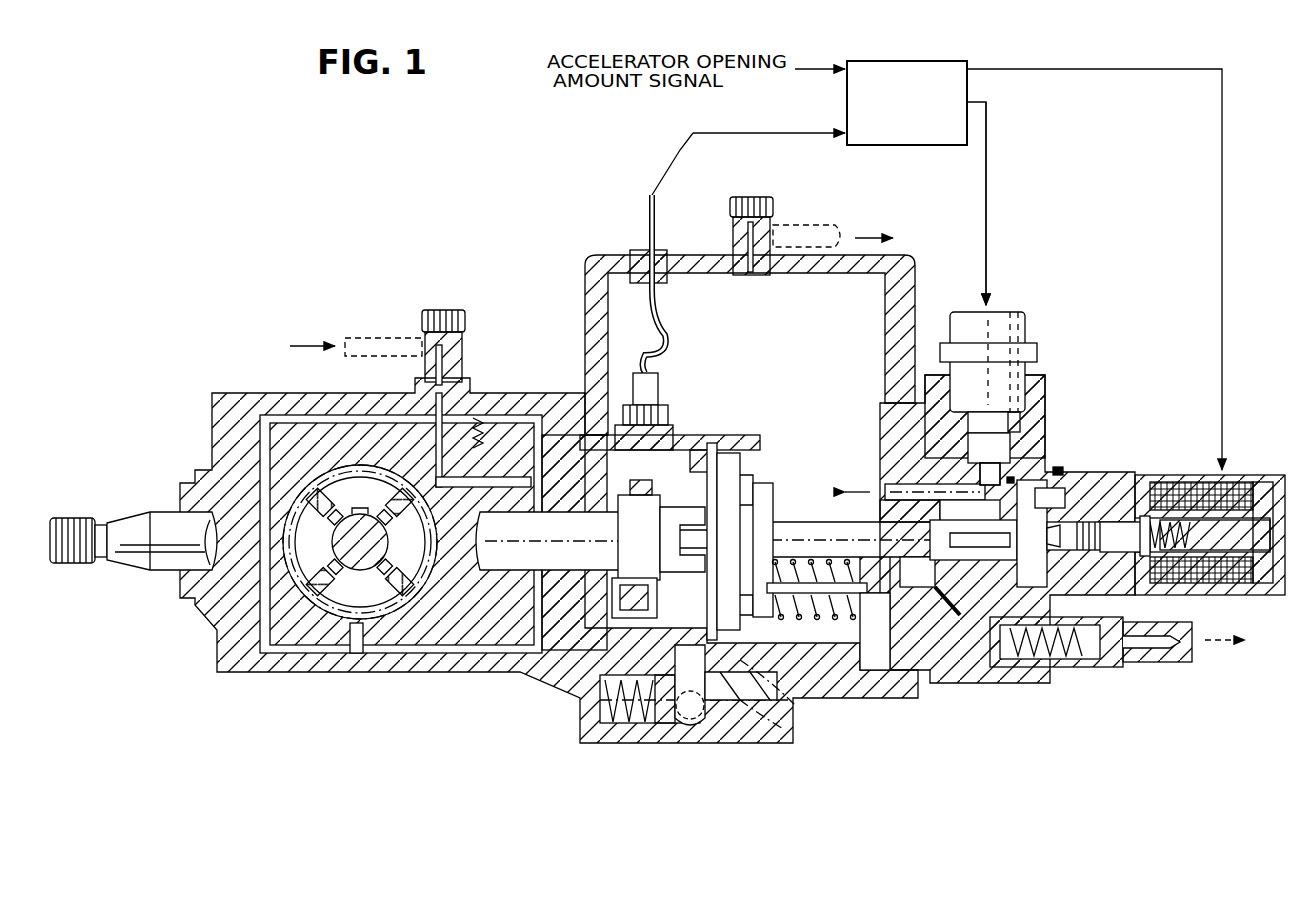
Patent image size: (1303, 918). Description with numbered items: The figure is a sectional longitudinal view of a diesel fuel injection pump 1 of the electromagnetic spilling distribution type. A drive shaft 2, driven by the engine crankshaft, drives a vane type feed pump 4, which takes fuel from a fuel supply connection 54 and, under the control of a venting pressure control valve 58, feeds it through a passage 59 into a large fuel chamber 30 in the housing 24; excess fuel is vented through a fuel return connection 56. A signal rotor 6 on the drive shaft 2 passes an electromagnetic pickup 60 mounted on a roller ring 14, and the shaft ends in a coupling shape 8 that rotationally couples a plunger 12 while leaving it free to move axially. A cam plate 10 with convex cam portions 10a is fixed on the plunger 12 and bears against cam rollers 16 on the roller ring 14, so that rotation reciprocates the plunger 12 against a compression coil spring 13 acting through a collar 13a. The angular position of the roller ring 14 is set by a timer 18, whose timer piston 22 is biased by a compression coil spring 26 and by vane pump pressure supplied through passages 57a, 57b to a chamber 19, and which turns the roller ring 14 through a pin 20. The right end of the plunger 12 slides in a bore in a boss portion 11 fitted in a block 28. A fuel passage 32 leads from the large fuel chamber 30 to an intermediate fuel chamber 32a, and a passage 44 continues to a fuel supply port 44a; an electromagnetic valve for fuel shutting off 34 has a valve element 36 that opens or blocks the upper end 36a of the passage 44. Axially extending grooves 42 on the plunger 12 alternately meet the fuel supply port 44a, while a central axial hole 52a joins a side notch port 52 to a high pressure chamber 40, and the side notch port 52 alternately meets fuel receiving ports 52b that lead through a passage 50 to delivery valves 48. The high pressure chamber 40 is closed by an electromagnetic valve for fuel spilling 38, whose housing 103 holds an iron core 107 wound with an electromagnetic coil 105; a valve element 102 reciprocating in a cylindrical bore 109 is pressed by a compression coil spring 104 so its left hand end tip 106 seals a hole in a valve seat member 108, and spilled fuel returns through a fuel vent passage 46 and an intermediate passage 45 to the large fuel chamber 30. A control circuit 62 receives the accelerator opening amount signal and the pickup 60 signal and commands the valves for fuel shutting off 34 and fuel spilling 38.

The diesel fuel injection pump 1 is at (584, 258).
The drive shaft 2 is at (125, 562).
The vane type feed pump 4 is at (395, 605).
The signal rotor 6 is at (642, 596).
The coupling shape 8 is at (700, 518).
The cam plate 10 is at (742, 475).
The convex cam portion 10a is at (733, 455).
The boss portion 11 is at (870, 482).
The plunger 12 is at (803, 522).
The compression coil spring 13 is at (800, 606).
The collar 13a is at (765, 612).
The roller ring 14 is at (672, 440).
The cam roller 16 is at (695, 452).
The timer 18 is at (666, 745).
The chamber 19 is at (780, 730).
The pin 20 is at (698, 730).
The timer piston 22 is at (655, 722).
The housing 24 is at (540, 660).
The compression coil spring 26 is at (598, 728).
The block 28 is at (1045, 385).
The large fuel chamber 30 is at (895, 283).
The fuel passage 32 is at (885, 432).
The intermediate fuel chamber 32a is at (1015, 430).
The electromagnetic valve for fuel shutting off 34 is at (1032, 318).
The valve element 36 is at (1010, 452).
The upper end of passage 36a is at (968, 447).
The electromagnetic valve for fuel spilling 38 is at (1125, 460).
The high pressure chamber 40 is at (1020, 550).
The axially extending grooves 42 is at (988, 550).
The passage 44 is at (965, 500).
The fuel supply port 44a is at (935, 505).
The intermediate passage 45 is at (890, 482).
The fuel vent passage 46 is at (1065, 500).
The delivery valve 48 is at (1165, 668).
The passage 50 is at (948, 632).
The side notch port 52 is at (882, 543).
The central axial hole 52a is at (950, 588).
The fuel receiving port 52b is at (900, 602).
The fuel supply connection 54 is at (445, 315).
The fuel return connection 56 is at (750, 210).
The passage 57a is at (790, 708).
The passage 57b is at (785, 728).
The venting pressure control valve 58 is at (490, 425).
The passage 59 is at (528, 430).
The electromagnetic pickup 60 is at (656, 376).
The control circuit 62 is at (928, 146).
The valve element 102 is at (1128, 520).
The housing 103 is at (1120, 478).
The compression coil spring 104 is at (1168, 488).
The electromagnetic coil 105 is at (1243, 482).
The left hand end tip 106 is at (1062, 550).
The iron core 107 is at (1265, 550).
The valve seat member 108 is at (1050, 490).
The cylindrical bore 109 is at (1135, 555).